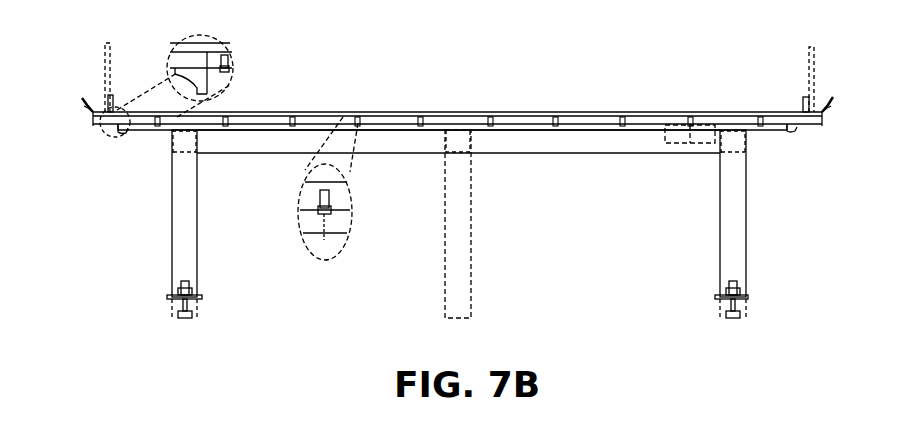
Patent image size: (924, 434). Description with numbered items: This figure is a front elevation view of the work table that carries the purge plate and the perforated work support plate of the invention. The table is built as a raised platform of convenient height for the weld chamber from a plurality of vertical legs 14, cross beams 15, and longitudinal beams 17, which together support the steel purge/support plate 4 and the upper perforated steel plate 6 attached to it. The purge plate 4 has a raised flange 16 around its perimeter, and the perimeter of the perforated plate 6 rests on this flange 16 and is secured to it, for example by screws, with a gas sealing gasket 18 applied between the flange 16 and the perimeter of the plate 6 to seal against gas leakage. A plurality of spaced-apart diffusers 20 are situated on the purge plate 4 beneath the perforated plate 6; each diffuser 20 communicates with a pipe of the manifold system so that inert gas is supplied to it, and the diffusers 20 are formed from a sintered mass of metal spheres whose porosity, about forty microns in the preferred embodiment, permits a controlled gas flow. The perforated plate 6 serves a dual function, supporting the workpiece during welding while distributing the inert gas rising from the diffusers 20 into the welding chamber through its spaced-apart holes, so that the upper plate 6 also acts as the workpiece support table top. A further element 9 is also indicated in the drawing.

The purge/support plate 4 is at (644, 130).
The perforated steel plate 6 is at (657, 112).
The upright post 9 is at (104, 110).
The vertical legs 14 is at (830, 222).
The cross beams 15 is at (172, 140).
The raised flange 16 is at (104, 130).
The longitudinal beams 17 is at (253, 154).
The gas sealing gasket 18 is at (93, 115).
The diffusers 20 is at (310, 113).